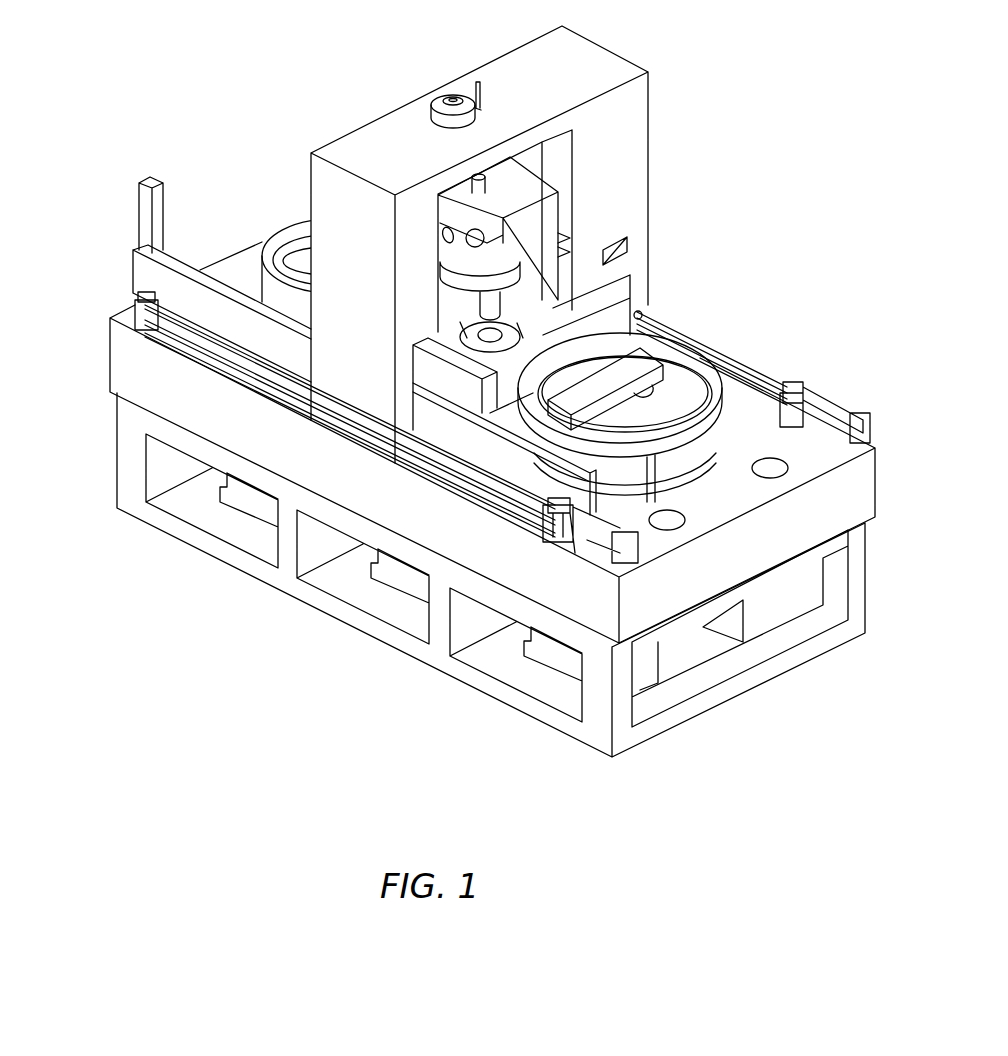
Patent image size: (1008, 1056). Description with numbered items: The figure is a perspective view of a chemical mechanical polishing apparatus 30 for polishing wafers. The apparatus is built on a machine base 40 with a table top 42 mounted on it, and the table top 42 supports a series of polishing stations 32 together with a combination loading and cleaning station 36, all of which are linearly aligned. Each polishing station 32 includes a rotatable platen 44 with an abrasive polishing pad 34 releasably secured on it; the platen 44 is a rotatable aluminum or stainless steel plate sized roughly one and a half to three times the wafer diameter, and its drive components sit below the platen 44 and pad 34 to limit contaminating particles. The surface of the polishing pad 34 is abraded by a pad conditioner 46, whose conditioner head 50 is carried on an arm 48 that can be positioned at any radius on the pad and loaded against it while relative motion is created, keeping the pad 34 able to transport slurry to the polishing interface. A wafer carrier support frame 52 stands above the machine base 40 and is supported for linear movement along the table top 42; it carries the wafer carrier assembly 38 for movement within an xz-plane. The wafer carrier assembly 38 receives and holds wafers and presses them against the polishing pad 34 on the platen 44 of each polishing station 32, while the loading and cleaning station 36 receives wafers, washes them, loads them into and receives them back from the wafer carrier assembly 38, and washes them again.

The chemical mechanical polishing apparatus 30 is at (205, 98).
The polishing station 32 is at (280, 220).
The abrasive polishing pad 34 is at (668, 370).
The combination loading and cleaning station 36 is at (547, 338).
The wafer carrier assembly 38 is at (540, 225).
The machine base 40 is at (117, 445).
The table top 42 is at (108, 348).
The rotatable platen 44 is at (740, 367).
The pad conditioner 46 is at (673, 338).
The arm 48 is at (545, 425).
The conditioner head 50 is at (730, 427).
The wafer carrier support frame 52 is at (648, 110).